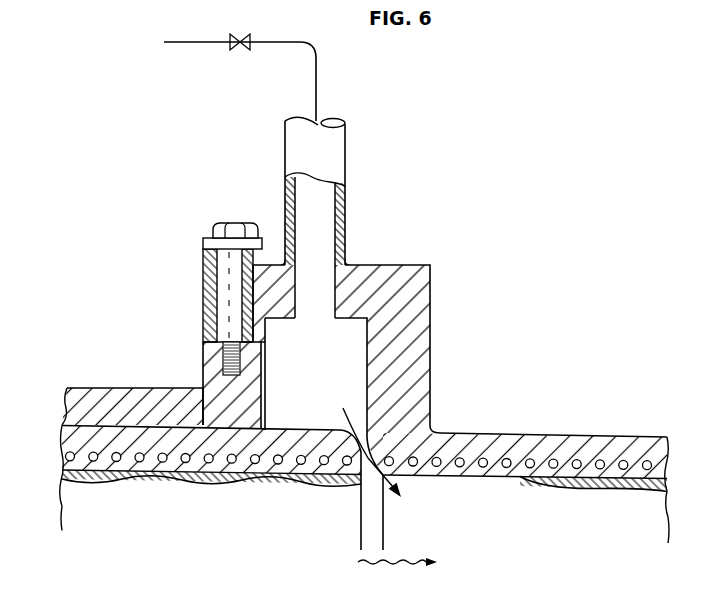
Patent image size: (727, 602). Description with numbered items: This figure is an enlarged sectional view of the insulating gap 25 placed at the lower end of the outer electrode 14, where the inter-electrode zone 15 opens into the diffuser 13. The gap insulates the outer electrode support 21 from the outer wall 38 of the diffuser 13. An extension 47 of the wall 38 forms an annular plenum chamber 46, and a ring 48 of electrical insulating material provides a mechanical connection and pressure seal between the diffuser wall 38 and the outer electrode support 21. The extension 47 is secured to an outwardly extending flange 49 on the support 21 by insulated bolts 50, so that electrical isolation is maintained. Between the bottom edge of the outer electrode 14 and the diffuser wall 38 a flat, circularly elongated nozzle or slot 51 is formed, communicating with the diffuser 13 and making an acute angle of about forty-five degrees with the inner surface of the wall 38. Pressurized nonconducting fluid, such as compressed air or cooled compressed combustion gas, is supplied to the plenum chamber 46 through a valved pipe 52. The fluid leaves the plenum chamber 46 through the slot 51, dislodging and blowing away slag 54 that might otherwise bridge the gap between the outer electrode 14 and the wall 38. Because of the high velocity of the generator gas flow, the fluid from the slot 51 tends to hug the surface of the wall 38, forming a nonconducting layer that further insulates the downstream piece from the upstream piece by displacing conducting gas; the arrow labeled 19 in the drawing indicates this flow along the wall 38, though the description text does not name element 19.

The diffuser 13 is at (539, 571).
The outer electrode 14 is at (82, 433).
The inter-electrode zone 15 is at (175, 530).
The fuel gas flow 19 is at (397, 562).
The outer electrode support 21 is at (138, 386).
The insulating gap 25 is at (378, 505).
The outer wall of the diffuser 38 is at (513, 440).
The annular plenum chamber 46 is at (320, 377).
The extension of the diffuser wall 47 is at (421, 293).
The ring of electrical insulating material 48 is at (204, 322).
The outwardly extending flange 49 is at (207, 362).
The insulated bolts 50 is at (247, 222).
The nozzle or slot 51 is at (361, 445).
The valved pipe 52 is at (239, 38).
The slag 54 is at (317, 483).